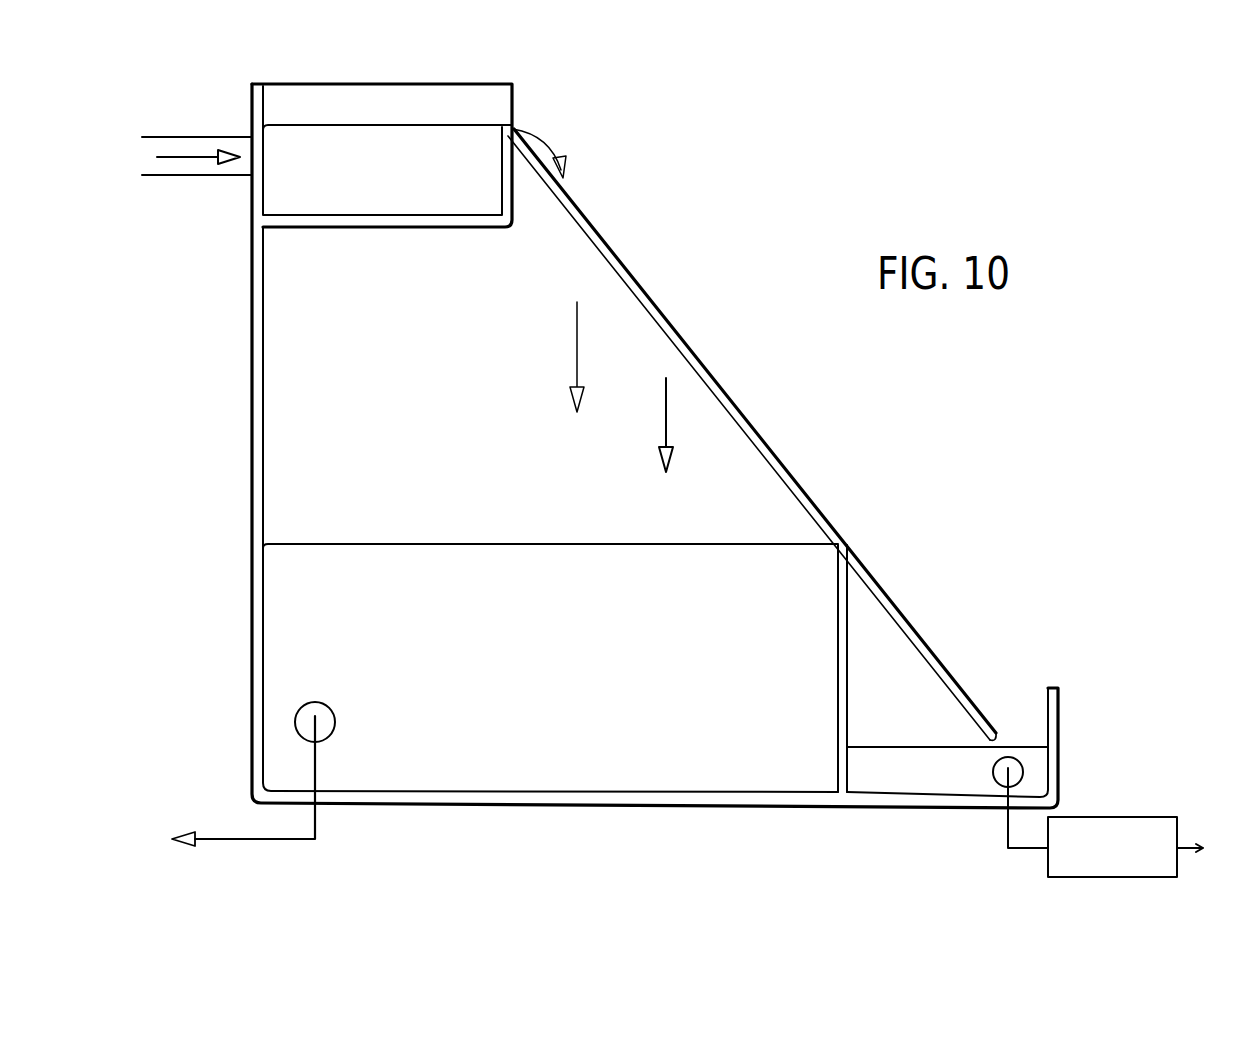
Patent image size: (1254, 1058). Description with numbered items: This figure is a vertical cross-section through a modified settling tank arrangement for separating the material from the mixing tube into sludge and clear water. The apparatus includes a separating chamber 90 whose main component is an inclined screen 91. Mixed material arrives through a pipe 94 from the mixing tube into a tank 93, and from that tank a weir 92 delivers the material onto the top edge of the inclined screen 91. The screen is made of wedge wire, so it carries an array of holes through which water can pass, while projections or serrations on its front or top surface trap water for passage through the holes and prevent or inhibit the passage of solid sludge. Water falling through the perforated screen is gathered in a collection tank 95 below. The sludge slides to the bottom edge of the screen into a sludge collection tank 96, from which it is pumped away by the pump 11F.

The separating chamber 90 is at (622, 226).
The inclined screen 91 is at (648, 299).
The weir 92 is at (513, 128).
The tank 93 is at (397, 223).
The pipe 94 is at (183, 152).
The collection tank 95 is at (573, 777).
The sludge collection tank 96 is at (893, 784).
The pump 11F is at (1173, 870).